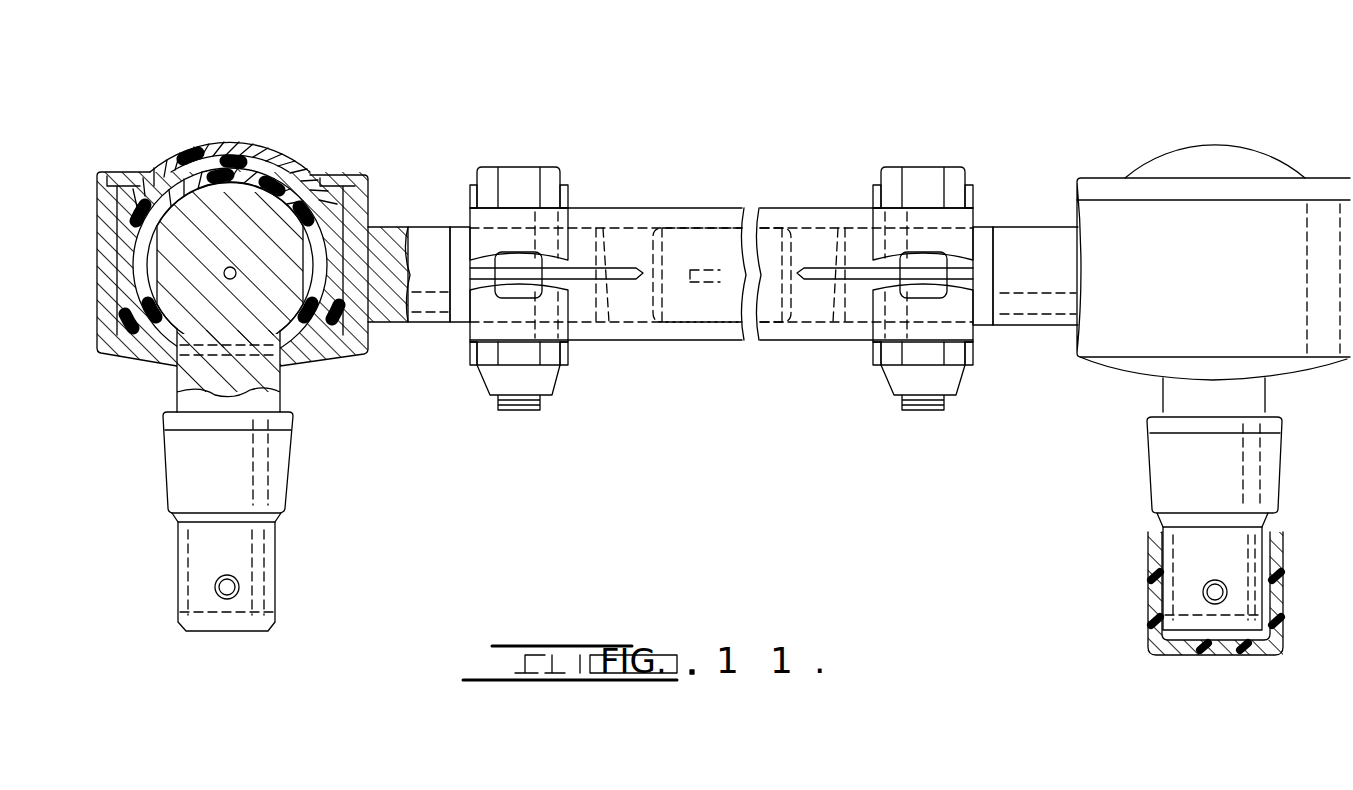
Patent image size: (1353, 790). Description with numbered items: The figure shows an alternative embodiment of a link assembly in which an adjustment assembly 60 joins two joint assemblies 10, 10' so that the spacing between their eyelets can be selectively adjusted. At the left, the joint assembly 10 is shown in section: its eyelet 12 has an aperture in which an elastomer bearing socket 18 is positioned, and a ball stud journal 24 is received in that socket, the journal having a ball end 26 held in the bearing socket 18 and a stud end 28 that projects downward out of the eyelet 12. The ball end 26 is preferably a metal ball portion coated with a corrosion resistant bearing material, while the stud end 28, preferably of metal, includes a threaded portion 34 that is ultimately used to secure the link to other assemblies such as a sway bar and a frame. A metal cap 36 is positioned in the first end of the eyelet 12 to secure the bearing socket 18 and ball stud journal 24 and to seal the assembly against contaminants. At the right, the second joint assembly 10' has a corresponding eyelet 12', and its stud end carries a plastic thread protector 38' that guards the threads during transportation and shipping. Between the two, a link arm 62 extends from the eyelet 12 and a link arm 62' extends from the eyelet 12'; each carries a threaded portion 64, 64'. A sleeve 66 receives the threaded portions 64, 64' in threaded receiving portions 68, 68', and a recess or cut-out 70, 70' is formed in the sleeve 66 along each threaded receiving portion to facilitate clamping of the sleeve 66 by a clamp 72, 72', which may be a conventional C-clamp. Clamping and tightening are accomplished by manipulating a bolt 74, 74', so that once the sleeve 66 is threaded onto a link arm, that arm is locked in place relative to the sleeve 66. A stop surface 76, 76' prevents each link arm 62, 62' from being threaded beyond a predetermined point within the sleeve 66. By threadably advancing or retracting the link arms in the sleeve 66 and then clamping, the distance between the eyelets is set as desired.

The joint assembly 10 is at (232, 206).
The joint assembly 10' is at (1213, 346).
The eyelet 12 is at (253, 238).
The eyelet 12' is at (1213, 241).
The elastomer bearing socket 18 is at (126, 238).
The ball stud journal 24 is at (302, 358).
The ball end 26 is at (263, 170).
The stud end 28 is at (160, 513).
The threaded portion 34 is at (278, 562).
The metal cap 36 is at (177, 148).
The plastic thread protector 38' is at (1175, 593).
The adjustment assembly 60 is at (738, 128).
The link arm 62 is at (428, 304).
The link arm 62' is at (1035, 309).
The threaded portion 64 is at (440, 231).
The threaded portion 64' is at (1015, 252).
The sleeve 66 is at (728, 346).
The threaded receiving portion 68 is at (602, 310).
The threaded receiving portion 68' is at (823, 310).
The recess 70 is at (564, 233).
The recess 70' is at (885, 219).
The clamp 72 is at (541, 242).
The clamp 72' is at (947, 246).
The bolt 74 is at (518, 257).
The bolt 74' is at (921, 257).
The stop surface 76 is at (697, 245).
The stop surface 76' is at (777, 243).